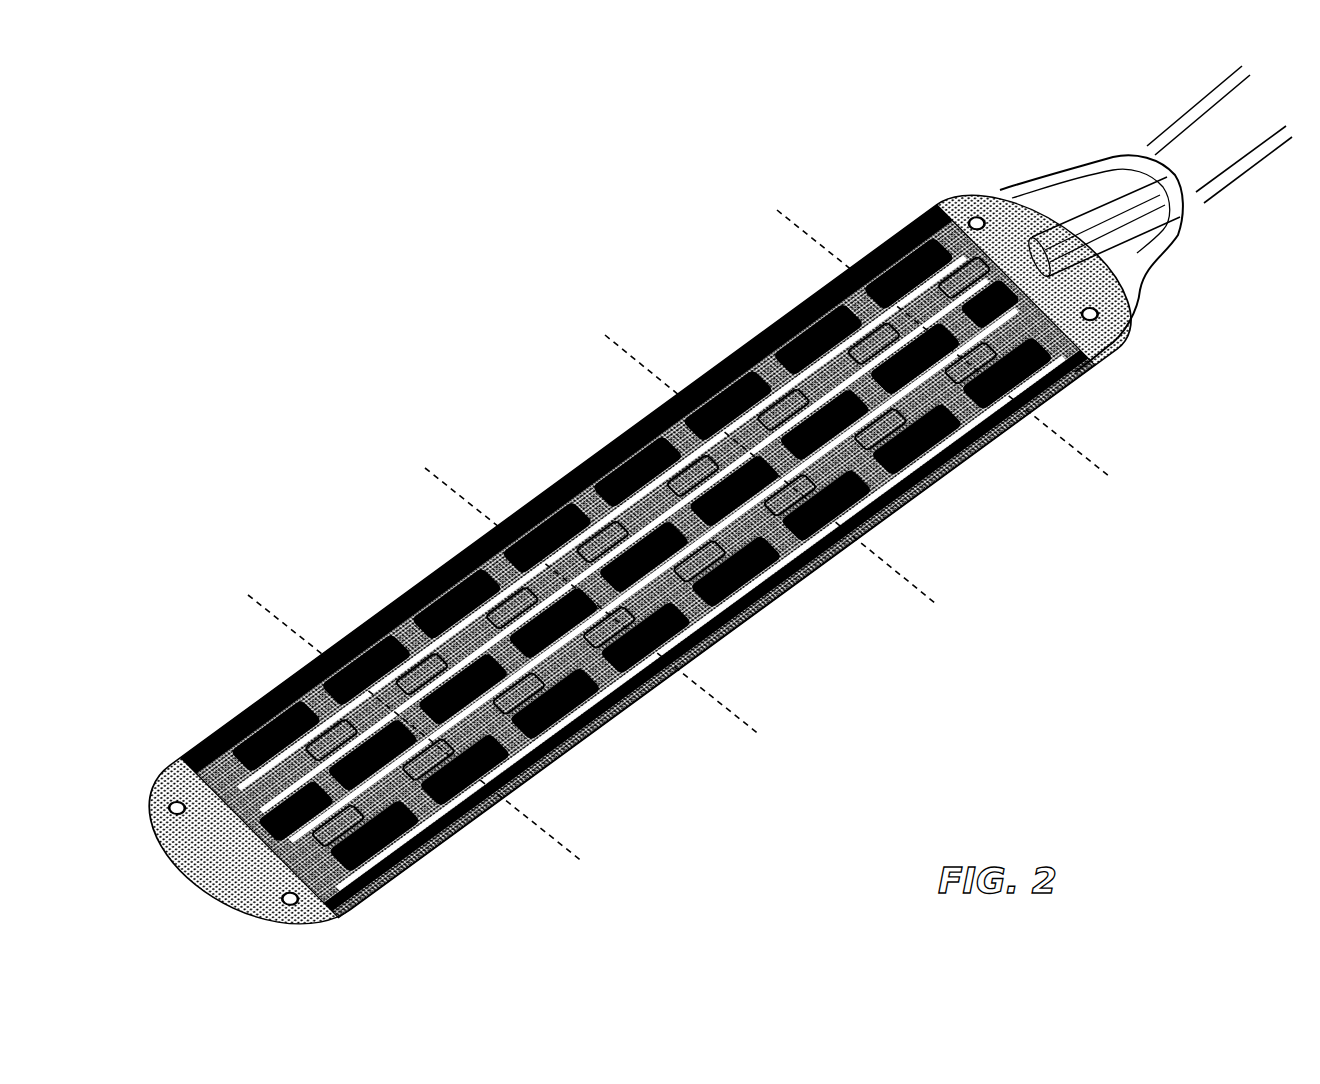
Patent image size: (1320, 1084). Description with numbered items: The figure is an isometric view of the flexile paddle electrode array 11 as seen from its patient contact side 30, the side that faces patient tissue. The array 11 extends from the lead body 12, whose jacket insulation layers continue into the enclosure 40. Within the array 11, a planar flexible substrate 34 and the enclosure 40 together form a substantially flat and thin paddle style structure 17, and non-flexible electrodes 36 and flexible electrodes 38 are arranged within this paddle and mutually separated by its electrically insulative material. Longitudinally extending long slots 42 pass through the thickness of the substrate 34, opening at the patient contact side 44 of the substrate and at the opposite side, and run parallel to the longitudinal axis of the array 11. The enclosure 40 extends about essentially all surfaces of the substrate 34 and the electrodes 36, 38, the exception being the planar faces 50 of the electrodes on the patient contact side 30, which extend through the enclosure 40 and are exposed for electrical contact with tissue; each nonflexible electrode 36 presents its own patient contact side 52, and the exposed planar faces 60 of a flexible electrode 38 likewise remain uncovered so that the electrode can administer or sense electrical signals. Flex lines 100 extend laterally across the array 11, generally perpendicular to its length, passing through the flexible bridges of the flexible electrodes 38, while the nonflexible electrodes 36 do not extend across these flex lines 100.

The flexile paddle electrode array 11 is at (698, 511).
The lead body 12 is at (1175, 123).
The paddle style structure 17 is at (918, 212).
The patient contact side 30 is at (638, 561).
The planar flexible substrate 34 is at (892, 267).
The non-flexible electrodes 36 is at (592, 505).
The flexible electrodes 38 is at (639, 560).
The enclosure 40 is at (993, 183).
The long slots 42 is at (690, 604).
The patient contact side of the substrate 44 is at (654, 595).
The planar faces 50 is at (648, 509).
The patient contact side of a nonflexible electrode 52 is at (915, 359).
The planar faces of the flexible electrode 60 is at (958, 323).
The flex lines 100 is at (790, 232).